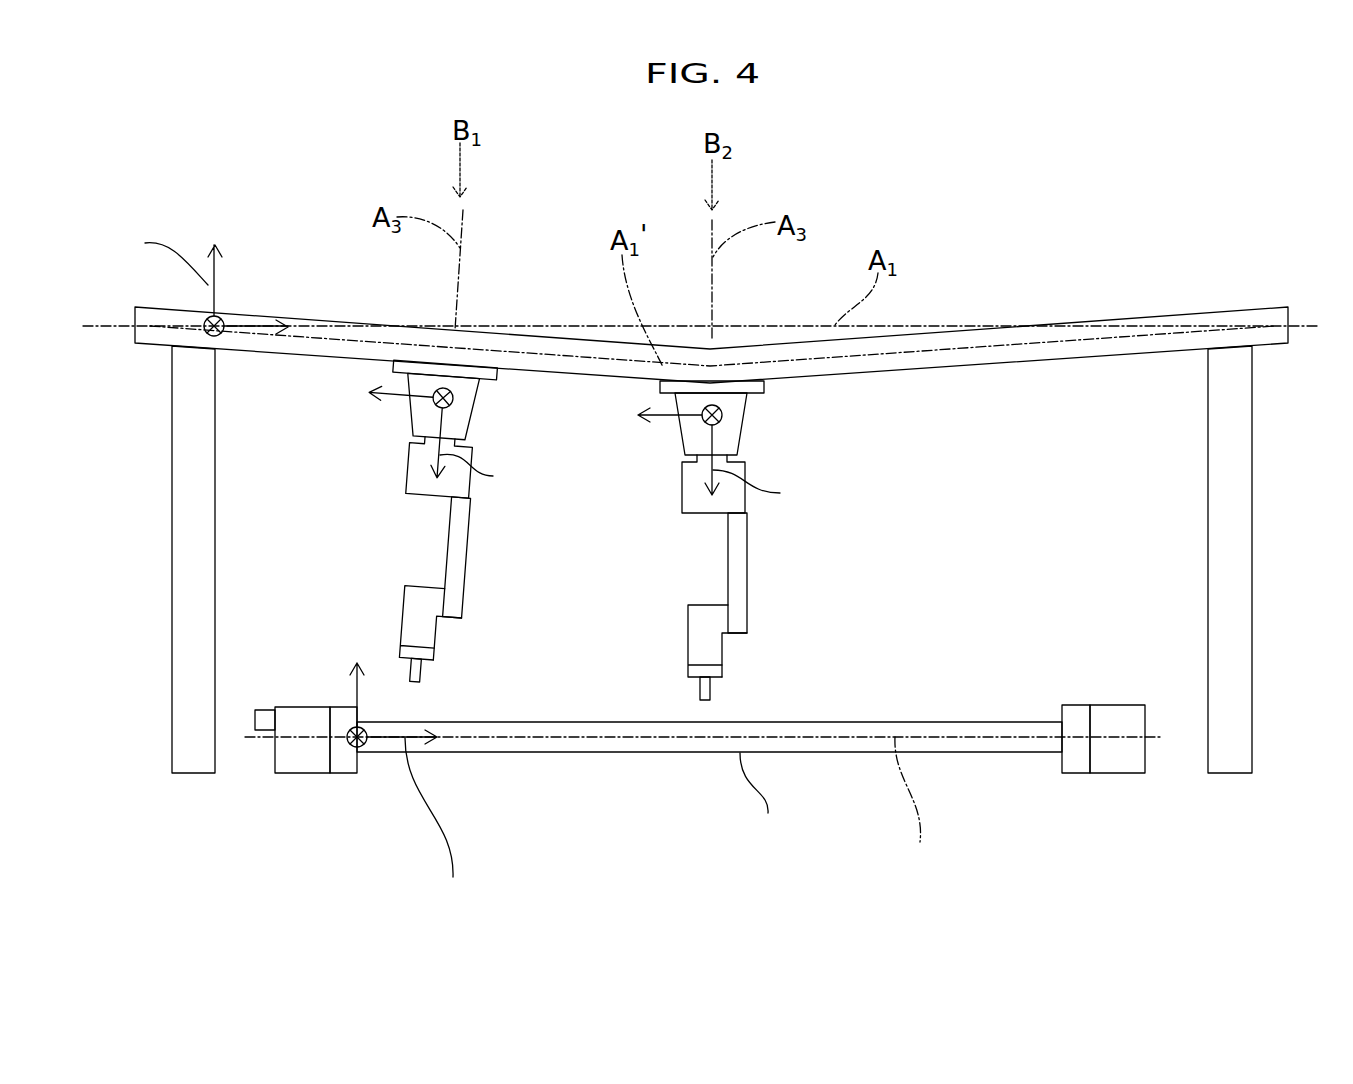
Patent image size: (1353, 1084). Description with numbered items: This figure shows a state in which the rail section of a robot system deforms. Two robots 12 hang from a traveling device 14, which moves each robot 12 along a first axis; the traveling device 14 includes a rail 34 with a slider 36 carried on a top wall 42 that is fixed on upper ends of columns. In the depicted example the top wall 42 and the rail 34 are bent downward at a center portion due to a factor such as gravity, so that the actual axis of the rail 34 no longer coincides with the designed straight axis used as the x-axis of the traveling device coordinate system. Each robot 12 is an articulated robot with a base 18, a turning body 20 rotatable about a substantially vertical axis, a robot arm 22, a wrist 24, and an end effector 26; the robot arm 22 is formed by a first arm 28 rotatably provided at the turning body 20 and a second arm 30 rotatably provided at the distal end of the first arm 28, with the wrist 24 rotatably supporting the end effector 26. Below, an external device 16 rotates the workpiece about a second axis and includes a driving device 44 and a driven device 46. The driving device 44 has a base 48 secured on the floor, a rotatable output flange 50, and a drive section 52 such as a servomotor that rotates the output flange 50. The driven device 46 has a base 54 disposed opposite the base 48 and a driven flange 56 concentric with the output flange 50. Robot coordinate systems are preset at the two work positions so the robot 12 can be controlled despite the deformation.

The robot 12 is at (621, 530).
The traveling device 14 is at (1117, 277).
The external device 16 is at (698, 793).
The base 18 is at (470, 415).
The turning body 20 is at (407, 462).
The robot arm 22 is at (659, 587).
The wrist 24 is at (400, 645).
The end effector 26 is at (418, 672).
The first arm 28 is at (466, 556).
The second arm 30 is at (437, 637).
The rail 34 is at (1025, 362).
The slider 36 is at (497, 378).
The top wall 42 is at (613, 345).
The driving device 44 is at (306, 774).
The driven device 46 is at (1116, 804).
The base 48 is at (310, 767).
The output flange 50 is at (342, 767).
The drive section 52 is at (270, 712).
The base 54 is at (1120, 770).
The driven flange 56 is at (1080, 772).